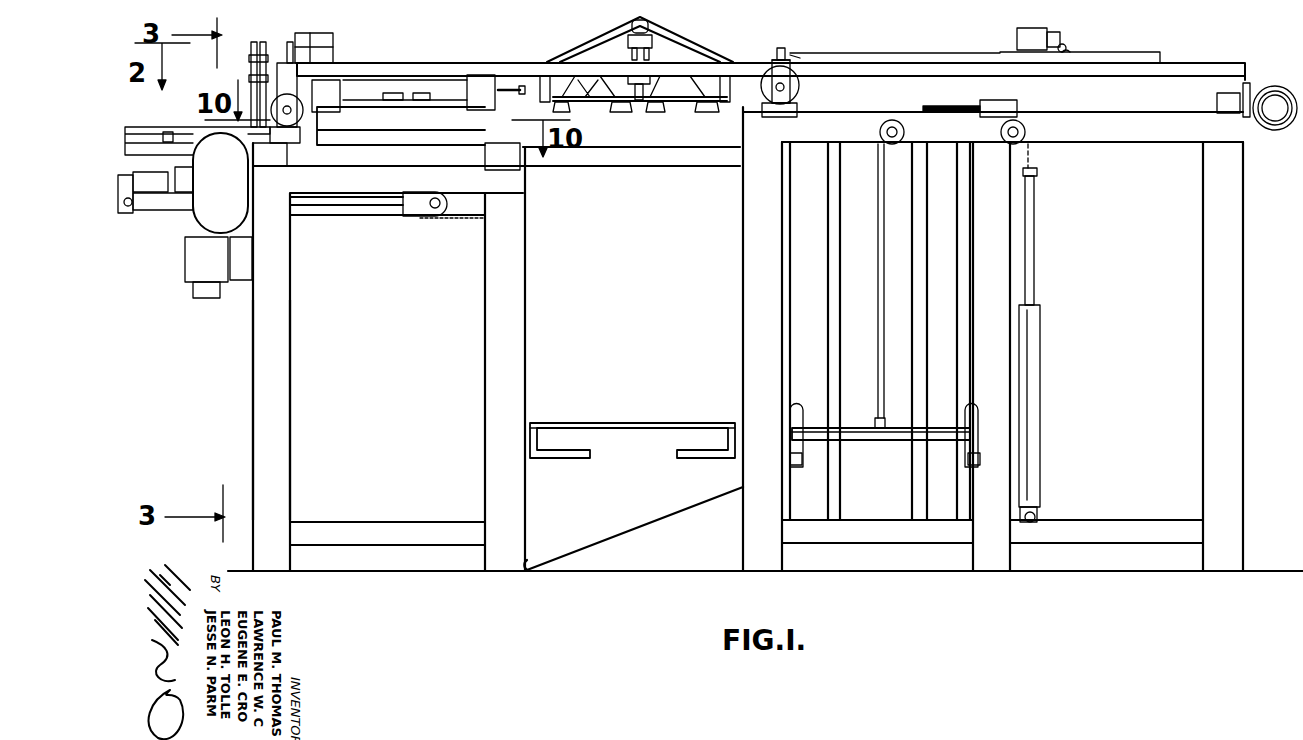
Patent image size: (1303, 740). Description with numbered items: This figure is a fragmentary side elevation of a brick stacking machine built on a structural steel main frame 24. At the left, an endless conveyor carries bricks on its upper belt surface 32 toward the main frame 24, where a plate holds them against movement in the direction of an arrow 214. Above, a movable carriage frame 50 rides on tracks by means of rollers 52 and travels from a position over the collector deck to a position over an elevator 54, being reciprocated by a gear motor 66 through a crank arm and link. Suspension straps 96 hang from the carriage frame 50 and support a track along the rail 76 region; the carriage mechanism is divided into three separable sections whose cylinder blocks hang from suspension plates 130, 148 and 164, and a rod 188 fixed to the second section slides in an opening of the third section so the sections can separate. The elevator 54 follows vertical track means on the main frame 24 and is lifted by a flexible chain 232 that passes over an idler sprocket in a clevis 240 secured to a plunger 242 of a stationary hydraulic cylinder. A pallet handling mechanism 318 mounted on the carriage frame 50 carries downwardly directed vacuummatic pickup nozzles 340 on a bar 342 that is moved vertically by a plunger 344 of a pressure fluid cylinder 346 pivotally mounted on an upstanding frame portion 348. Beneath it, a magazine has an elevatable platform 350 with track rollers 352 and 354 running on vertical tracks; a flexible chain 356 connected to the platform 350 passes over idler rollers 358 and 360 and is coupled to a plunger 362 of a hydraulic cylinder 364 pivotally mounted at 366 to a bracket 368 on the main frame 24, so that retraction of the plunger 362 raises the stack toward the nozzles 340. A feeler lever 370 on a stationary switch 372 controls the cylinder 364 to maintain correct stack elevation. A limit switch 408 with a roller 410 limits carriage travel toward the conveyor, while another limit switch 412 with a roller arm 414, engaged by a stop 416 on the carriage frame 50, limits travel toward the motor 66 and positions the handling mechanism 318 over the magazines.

The main frame 24 is at (283, 298).
The upper belt surface 32 is at (197, 127).
The movable carriage frame 50 is at (451, 52).
The rollers 52 is at (878, 44).
The elevator 54 is at (625, 423).
The gear motor 66 is at (1277, 115).
The track rail 76 is at (510, 65).
The suspension straps 96 is at (330, 90).
The suspension plate 130 is at (373, 123).
The suspension plate 148 is at (435, 117).
The suspension plate 164 is at (472, 122).
The rod 188 is at (513, 85).
The arrow 214 is at (168, 213).
The flexible chain 232 is at (472, 220).
The clevis 240 is at (427, 212).
The plunger 242 is at (365, 207).
The pallet handling mechanism 318 is at (790, 56).
The vacuummatic pickup nozzles 340 is at (570, 108).
The bar 342 is at (557, 102).
The plunger 344 is at (610, 107).
The pressure fluid cylinder 346 is at (740, 51).
The upstanding frame portion 348 is at (663, 32).
The elevatable platform 350 is at (882, 440).
The track roller 352 is at (790, 417).
The track roller 354 is at (976, 412).
The flexible chain 356 is at (880, 370).
The idler roller 358 is at (893, 122).
The idler roller 360 is at (1013, 118).
The plunger 362 is at (1034, 278).
The hydraulic cylinder 364 is at (1040, 332).
The pivotal mounting 366 is at (1040, 507).
The bracket 368 is at (1037, 522).
The feeler lever 370 is at (947, 106).
The stationary switch 372 is at (1025, 140).
The limit switch 408 is at (327, 38).
The roller 410 is at (290, 43).
The limit switch 412 is at (1017, 42).
The roller arm 414 is at (1063, 48).
The stop 416 is at (792, 62).